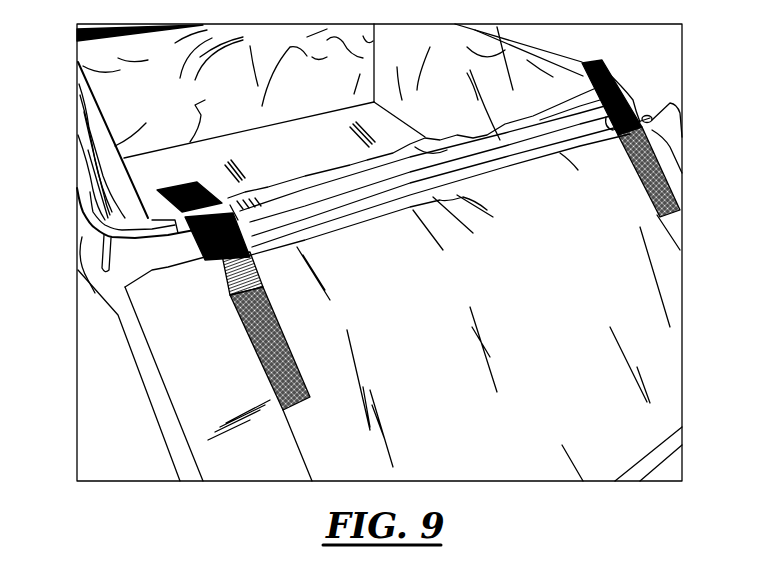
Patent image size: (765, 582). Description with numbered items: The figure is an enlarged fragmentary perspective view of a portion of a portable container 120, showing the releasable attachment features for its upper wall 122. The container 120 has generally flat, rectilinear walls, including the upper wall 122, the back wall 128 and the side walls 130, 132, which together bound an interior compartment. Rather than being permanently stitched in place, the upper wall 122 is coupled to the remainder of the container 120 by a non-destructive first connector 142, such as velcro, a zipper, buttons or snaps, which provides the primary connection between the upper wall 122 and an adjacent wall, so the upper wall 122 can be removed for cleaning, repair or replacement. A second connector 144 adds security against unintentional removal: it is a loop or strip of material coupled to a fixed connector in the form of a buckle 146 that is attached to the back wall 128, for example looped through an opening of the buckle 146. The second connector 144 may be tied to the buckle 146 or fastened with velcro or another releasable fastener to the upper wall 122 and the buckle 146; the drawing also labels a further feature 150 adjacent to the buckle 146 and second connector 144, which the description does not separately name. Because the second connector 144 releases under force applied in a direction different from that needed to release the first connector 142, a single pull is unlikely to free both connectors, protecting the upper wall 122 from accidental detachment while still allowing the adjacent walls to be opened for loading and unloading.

The portable container 120 is at (484, 514).
The upper wall 122 is at (166, 128).
The back wall 128 is at (162, 214).
The side wall 130 is at (100, 189).
The side wall 132 is at (523, 83).
The first connector 142 is at (322, 182).
The second connector 144 is at (280, 387).
The buckle 146 is at (205, 262).
The fastener section 150 is at (263, 163).